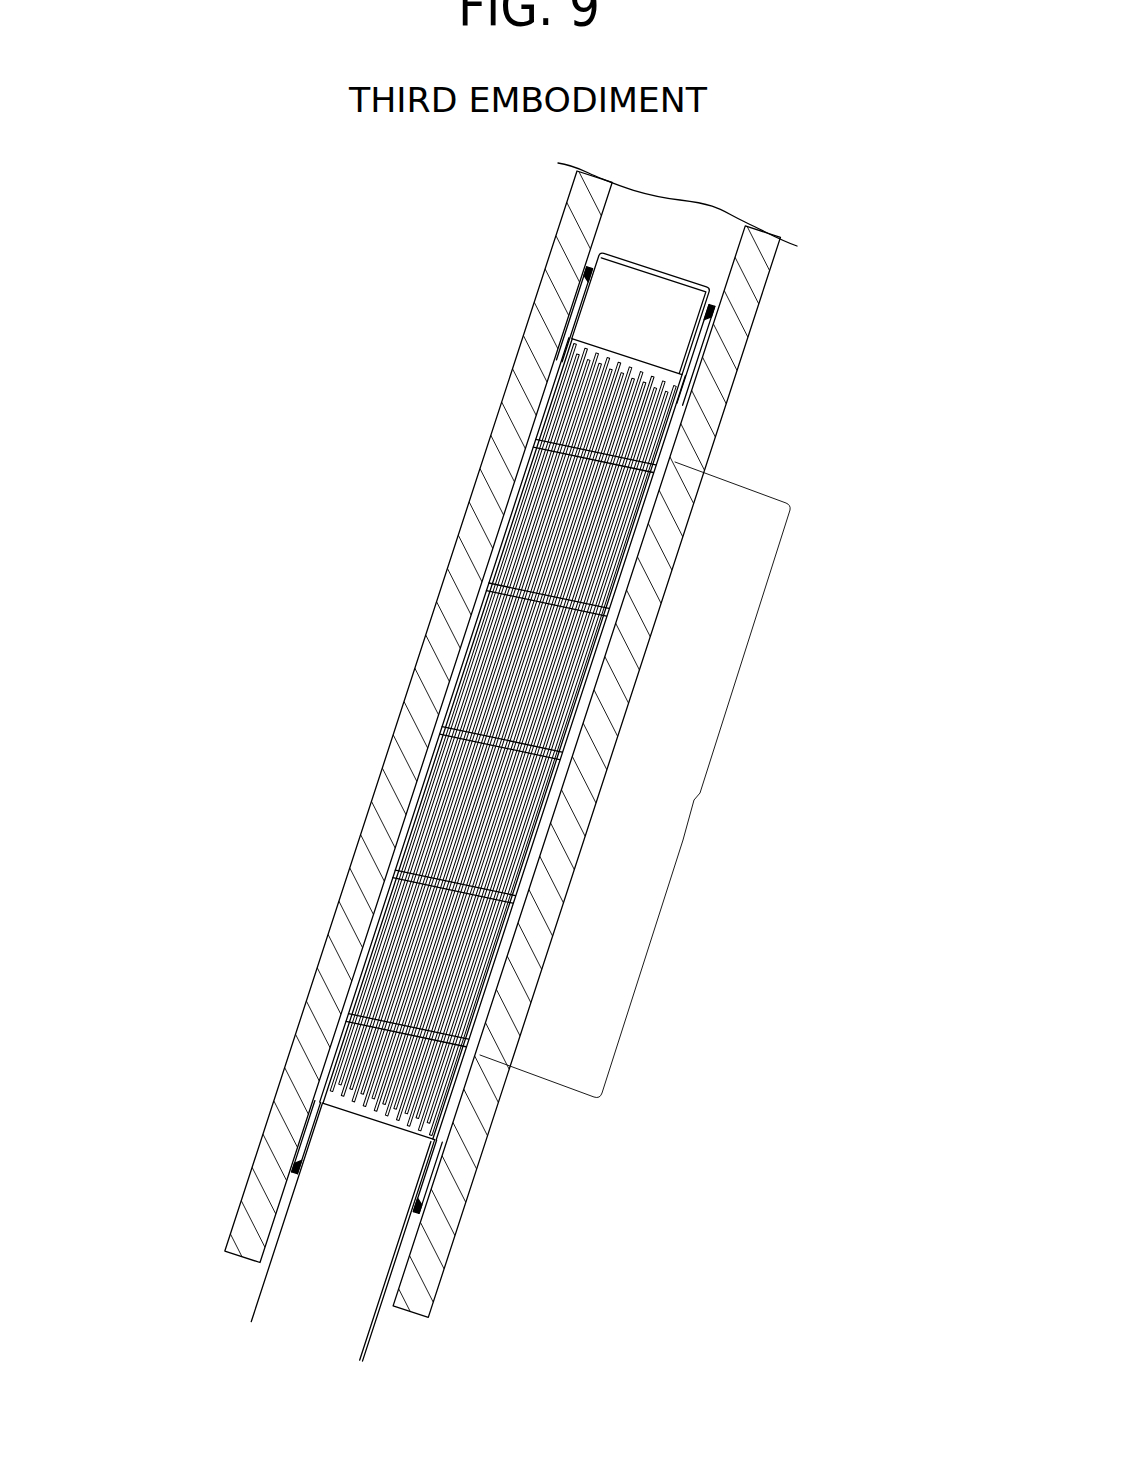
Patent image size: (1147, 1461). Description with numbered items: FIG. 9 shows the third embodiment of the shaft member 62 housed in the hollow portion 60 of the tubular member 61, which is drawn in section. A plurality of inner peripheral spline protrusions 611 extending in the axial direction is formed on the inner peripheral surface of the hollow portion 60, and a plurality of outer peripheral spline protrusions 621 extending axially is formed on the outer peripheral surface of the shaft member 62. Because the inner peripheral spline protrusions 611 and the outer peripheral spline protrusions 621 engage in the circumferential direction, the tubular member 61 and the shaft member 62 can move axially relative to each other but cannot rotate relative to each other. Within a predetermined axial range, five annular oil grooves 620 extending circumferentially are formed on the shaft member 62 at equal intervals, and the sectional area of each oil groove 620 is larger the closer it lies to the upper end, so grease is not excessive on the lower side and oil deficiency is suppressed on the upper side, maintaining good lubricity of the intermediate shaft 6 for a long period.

The intermediate shaft 6 is at (410, 378).
The hollow portion 60 is at (700, 238).
The tubular member 61 is at (442, 588).
The inner peripheral spline protrusions 611 is at (575, 292).
The shaft member 62 is at (683, 345).
The oil grooves 620 is at (501, 743).
The outer peripheral spline protrusions 621 is at (503, 740).